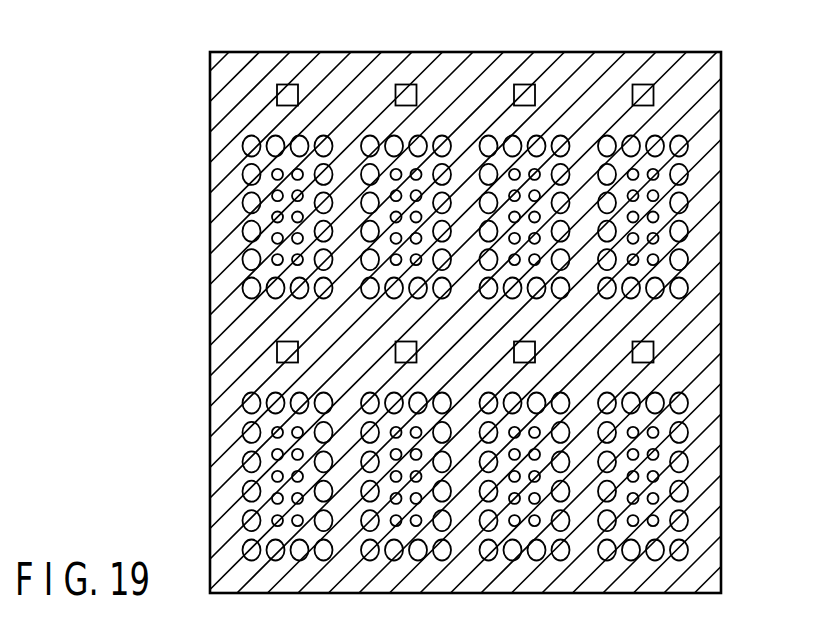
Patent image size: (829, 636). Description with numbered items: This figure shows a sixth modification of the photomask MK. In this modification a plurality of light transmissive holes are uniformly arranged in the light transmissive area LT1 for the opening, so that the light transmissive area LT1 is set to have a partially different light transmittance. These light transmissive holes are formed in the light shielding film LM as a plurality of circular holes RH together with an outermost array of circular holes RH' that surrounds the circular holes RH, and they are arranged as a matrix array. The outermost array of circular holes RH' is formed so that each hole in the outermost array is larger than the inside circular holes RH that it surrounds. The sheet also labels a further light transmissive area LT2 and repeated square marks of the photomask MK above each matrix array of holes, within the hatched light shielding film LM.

The light shielding film LM is at (703, 114).
The photomask MK is at (571, 51).
The second line of marks LT2 is at (288, 90).
The light transmissive area LT1 is at (467, 220).
The circular holes RH is at (403, 217).
The outermost array of circular holes RH' is at (418, 217).